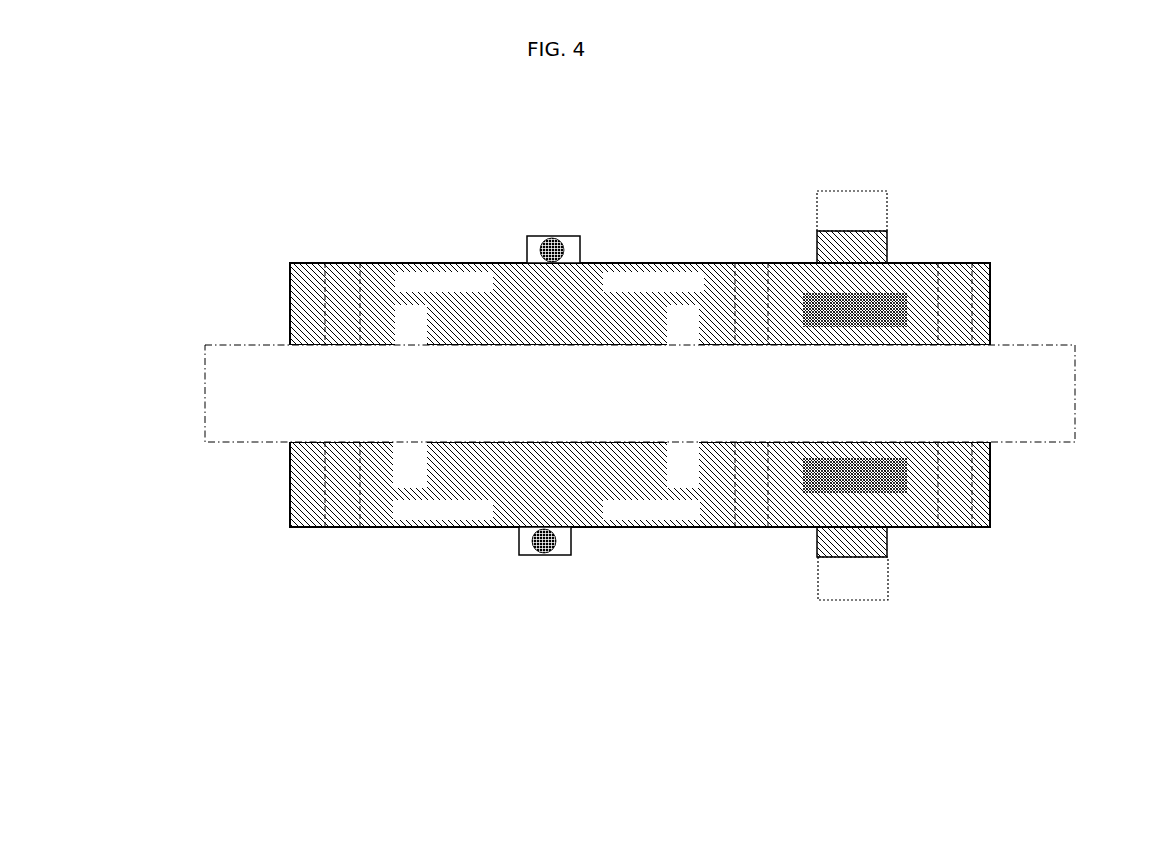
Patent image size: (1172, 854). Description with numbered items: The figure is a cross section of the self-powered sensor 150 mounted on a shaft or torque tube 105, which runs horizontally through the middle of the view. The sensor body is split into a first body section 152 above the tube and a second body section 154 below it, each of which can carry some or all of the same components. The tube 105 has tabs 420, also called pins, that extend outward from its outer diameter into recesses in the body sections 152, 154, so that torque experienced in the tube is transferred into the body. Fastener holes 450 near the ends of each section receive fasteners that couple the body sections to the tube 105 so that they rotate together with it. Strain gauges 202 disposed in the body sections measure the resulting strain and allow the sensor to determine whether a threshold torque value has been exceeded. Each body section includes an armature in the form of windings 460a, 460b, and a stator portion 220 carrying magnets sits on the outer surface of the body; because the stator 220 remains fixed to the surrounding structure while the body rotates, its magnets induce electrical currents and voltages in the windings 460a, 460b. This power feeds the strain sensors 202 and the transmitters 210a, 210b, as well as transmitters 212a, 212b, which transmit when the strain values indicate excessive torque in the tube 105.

The sensor 150 is at (518, 321).
The shaft or torque tube 105 is at (205, 393).
The first body section 152 is at (290, 298).
The second body section 154 is at (290, 487).
The strain gauges 202 is at (442, 263).
The tabs 420 is at (405, 335).
The fastener holes 450 is at (312, 263).
The windings 460a is at (965, 263).
The windings 460b is at (925, 527).
The transmitter 210a is at (536, 236).
The transmitter 210b is at (543, 555).
The transmitter 212a is at (817, 189).
The transmitter 212b is at (868, 580).
The stator portion 220 is at (886, 256).